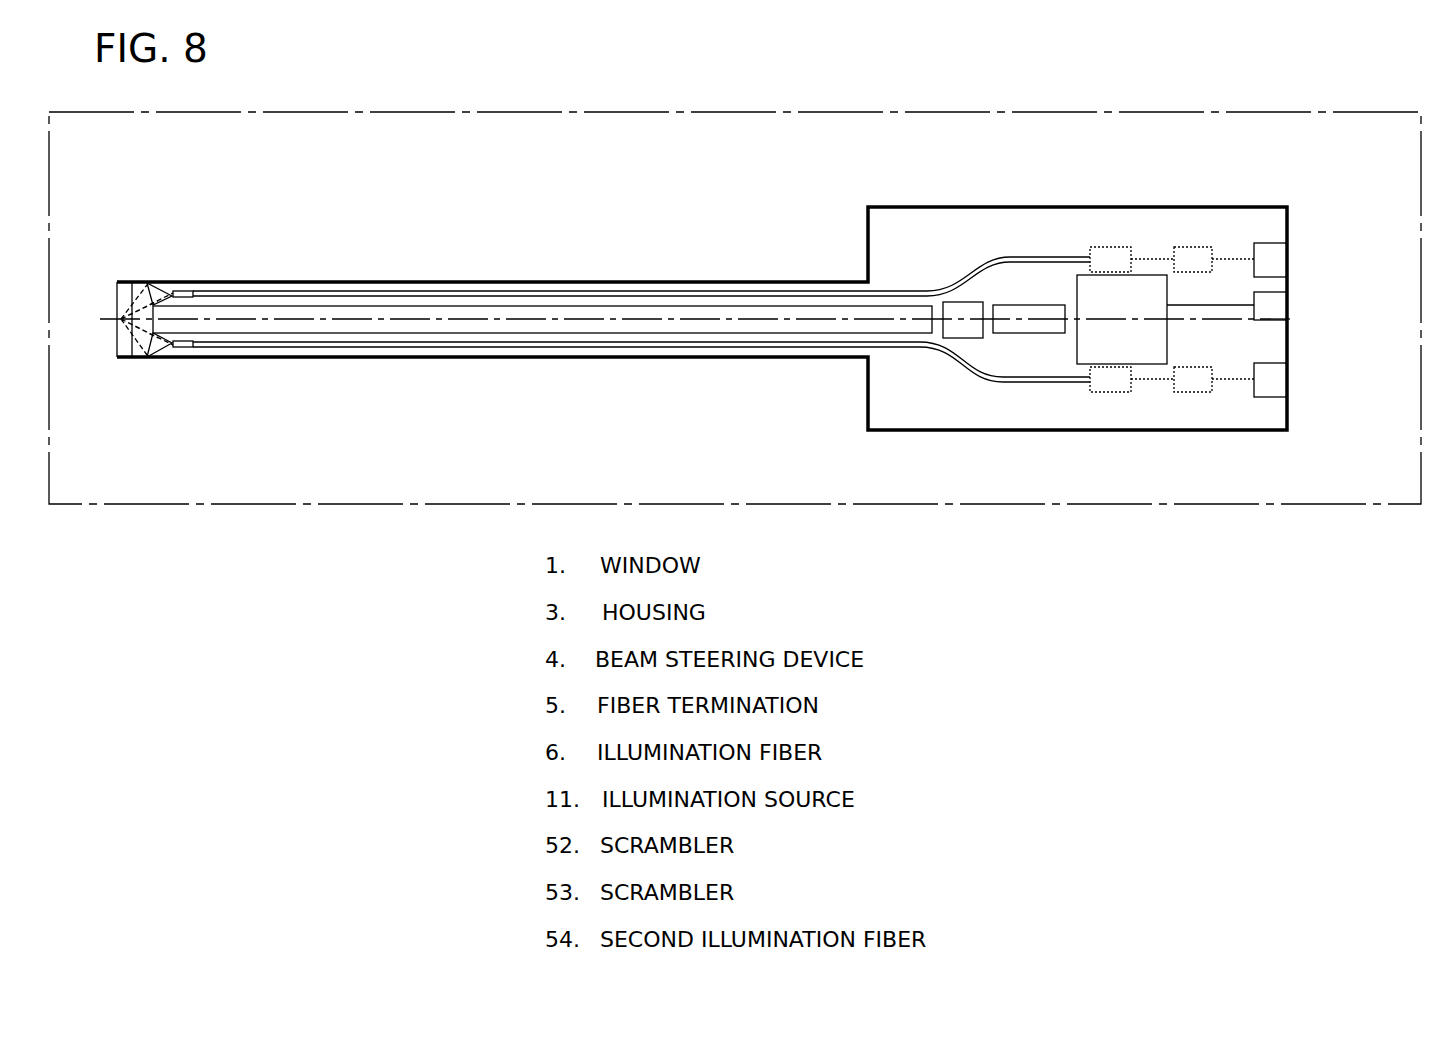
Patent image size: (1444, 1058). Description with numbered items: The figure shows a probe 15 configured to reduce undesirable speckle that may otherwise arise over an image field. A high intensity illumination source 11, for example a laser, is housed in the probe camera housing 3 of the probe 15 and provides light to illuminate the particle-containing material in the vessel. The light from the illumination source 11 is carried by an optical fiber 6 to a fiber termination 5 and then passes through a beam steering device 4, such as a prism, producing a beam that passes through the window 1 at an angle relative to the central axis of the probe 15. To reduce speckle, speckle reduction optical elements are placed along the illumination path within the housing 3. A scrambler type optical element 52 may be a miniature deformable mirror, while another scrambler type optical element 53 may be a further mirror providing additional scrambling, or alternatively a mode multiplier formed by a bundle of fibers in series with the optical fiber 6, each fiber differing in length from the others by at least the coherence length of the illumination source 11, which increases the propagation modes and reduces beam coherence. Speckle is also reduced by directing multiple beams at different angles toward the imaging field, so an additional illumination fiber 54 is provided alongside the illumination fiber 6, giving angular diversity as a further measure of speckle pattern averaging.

The window 1 is at (117, 297).
The probe camera housing 3 is at (921, 206).
The beam steering device 4 is at (157, 280).
The fiber termination 5 is at (190, 283).
The optical fiber 6 is at (410, 291).
The illumination source 11 is at (1289, 245).
The probe 15 is at (577, 112).
The scrambler type optical element 52 is at (1203, 247).
The scrambler type optical element 53 is at (1108, 247).
The illumination fiber 54 is at (959, 364).